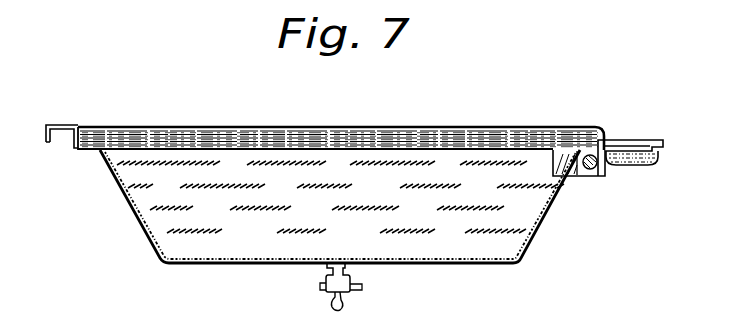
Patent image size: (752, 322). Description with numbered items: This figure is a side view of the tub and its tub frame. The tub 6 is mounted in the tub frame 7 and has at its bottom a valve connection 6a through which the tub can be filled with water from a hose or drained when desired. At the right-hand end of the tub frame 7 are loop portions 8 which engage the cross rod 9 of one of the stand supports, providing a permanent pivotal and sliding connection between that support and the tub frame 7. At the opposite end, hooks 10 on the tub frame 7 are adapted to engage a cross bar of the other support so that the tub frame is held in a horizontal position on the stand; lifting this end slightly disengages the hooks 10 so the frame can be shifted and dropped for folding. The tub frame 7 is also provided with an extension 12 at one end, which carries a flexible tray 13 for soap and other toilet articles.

The tub 6 is at (150, 201).
The valve connection 6a is at (349, 279).
The tub frame 7 is at (213, 148).
The loop portions 8 is at (584, 176).
The cross rod 9 is at (597, 169).
The hooks 10 is at (55, 153).
The extension 12 is at (640, 139).
The flexible tray 13 is at (645, 168).